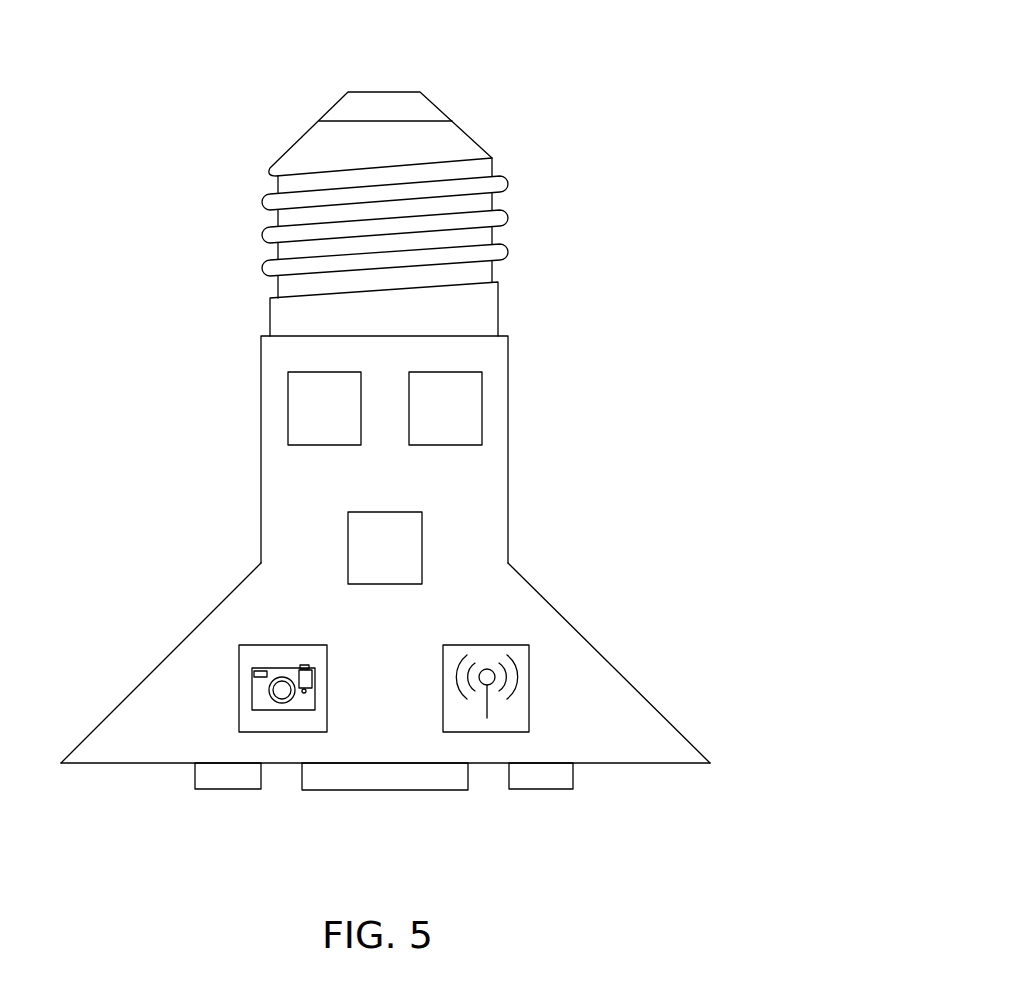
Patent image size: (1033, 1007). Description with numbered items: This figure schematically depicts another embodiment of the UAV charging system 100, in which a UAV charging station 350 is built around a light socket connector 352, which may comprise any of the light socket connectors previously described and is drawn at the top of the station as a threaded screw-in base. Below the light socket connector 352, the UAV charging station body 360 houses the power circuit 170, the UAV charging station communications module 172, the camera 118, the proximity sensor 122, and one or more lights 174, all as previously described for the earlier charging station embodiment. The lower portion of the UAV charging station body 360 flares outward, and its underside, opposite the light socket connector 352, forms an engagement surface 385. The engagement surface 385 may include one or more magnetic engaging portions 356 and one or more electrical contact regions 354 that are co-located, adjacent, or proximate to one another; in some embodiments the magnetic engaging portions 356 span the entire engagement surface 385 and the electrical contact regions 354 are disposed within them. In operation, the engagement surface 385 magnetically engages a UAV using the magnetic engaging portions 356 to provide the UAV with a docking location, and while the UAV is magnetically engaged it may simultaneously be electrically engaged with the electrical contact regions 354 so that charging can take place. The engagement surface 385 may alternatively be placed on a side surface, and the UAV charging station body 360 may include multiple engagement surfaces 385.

The UAV charging system 100 is at (391, 429).
The camera 118 is at (239, 700).
The proximity sensor 122 is at (529, 700).
The power circuit 170 is at (288, 410).
The UAV charging station communications module 172 is at (482, 410).
The lights 174 is at (383, 586).
The UAV charging station 350 is at (479, 205).
The light socket connector 352 is at (462, 128).
The electrical contact regions 354 is at (227, 790).
The magnetic engaging portions 356 is at (387, 792).
The UAV charging station body 360 is at (623, 648).
The engagement surface 385 is at (129, 765).